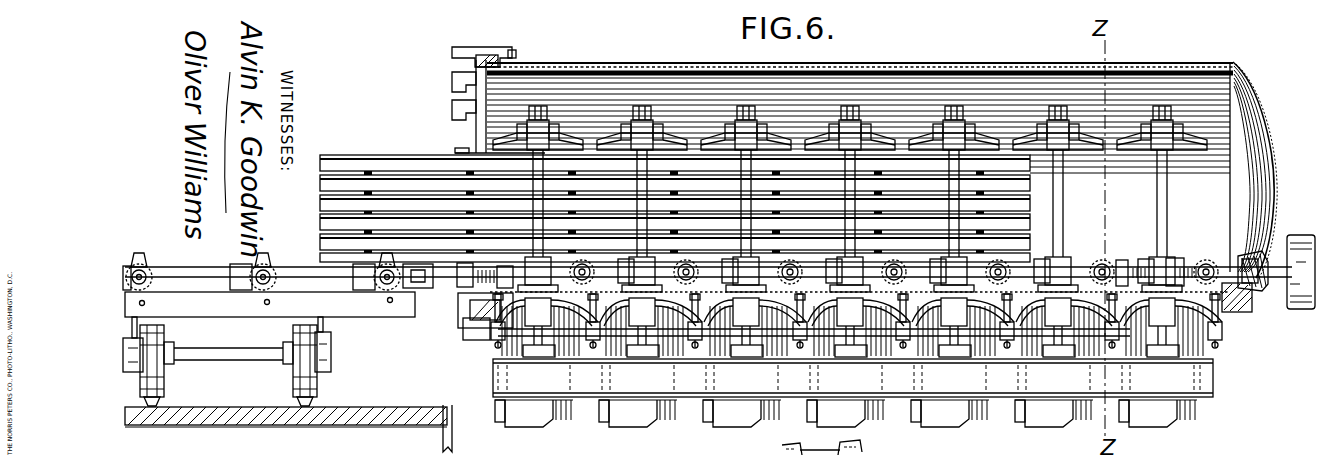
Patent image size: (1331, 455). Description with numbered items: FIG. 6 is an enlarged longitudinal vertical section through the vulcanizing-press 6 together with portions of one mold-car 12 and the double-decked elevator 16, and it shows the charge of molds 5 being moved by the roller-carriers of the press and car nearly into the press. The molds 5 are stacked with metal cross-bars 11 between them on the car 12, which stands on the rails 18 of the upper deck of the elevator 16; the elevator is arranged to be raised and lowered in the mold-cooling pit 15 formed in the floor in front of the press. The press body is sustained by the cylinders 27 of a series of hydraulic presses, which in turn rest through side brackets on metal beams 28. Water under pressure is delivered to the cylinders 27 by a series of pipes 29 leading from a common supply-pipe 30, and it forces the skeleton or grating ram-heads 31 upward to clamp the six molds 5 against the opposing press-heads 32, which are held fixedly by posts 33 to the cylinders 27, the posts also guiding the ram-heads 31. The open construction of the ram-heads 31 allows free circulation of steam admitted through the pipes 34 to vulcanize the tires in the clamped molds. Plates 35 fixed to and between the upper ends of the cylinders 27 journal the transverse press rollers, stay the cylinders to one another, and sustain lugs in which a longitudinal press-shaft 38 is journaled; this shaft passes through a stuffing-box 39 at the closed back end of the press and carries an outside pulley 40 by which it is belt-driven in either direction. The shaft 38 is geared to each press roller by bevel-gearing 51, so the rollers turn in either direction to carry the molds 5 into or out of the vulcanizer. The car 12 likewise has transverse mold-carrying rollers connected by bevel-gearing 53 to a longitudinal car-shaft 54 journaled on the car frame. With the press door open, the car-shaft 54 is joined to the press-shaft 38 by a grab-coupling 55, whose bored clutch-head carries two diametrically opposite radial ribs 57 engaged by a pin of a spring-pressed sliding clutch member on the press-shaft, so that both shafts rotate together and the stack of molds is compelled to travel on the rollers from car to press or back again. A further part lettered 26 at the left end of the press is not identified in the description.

The molds 5 is at (675, 208).
The vulcanizing-press 6 is at (968, 62).
The metal cross-bars 11 is at (467, 190).
The car 12 is at (220, 306).
The mold-cooling pit 15 is at (453, 428).
The double-decked elevator 16 is at (398, 415).
The upper-deck rails 18 is at (306, 406).
The end bracket 26 is at (452, 106).
The hydraulic press cylinders 27 is at (737, 410).
The metal beams 28 is at (853, 378).
The water pipes 29 is at (807, 345).
The common supply-pipe 30 is at (488, 335).
The ram-heads 31 is at (1174, 262).
The press-heads 32 is at (613, 133).
The posts 33 is at (647, 160).
The steam pipes 34 is at (590, 324).
The bearing-plates 35 is at (1127, 262).
The press-shaft 38 is at (528, 272).
The stuffing-box 39 is at (1257, 290).
The outside pulley 40 is at (1305, 310).
The bevel-gearing 51 is at (588, 264).
The bevel-gearing 53 is at (276, 270).
The car-shaft 54 is at (188, 278).
The grab-coupling 55 is at (445, 282).
The radial ribs 57 is at (286, 441).